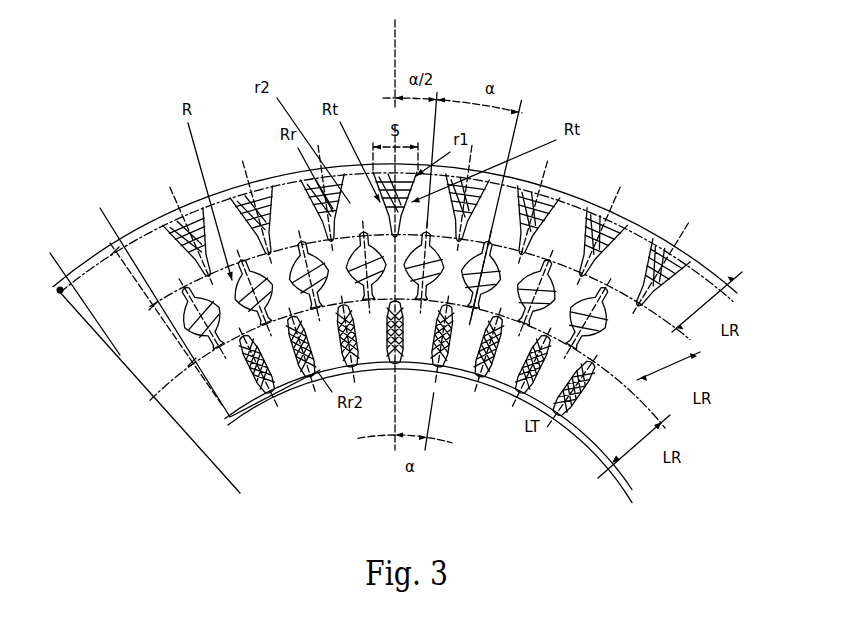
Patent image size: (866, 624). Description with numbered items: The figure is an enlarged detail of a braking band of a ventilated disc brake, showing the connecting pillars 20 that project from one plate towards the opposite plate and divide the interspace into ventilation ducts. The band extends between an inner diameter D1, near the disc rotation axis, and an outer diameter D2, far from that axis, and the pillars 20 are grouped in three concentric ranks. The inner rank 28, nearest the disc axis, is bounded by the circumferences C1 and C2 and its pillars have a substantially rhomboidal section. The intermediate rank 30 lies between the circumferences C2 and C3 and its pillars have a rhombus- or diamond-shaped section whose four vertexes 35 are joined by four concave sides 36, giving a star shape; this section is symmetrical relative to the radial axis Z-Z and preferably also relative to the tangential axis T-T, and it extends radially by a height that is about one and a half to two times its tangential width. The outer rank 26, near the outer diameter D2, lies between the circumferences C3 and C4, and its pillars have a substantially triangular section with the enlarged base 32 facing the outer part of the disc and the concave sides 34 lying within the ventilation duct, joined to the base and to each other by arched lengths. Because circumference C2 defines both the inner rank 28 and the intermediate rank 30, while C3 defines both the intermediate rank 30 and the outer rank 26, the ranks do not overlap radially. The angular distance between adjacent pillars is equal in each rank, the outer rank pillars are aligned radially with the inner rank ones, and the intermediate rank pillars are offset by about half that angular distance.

The pillars 20 is at (180, 236).
The outer rank 26 is at (670, 262).
The inner rank 28 is at (704, 258).
The intermediate rank 30 is at (528, 347).
The base 32 is at (465, 223).
The sides 34 is at (383, 212).
The vertexes 35 is at (543, 297).
The sides 36 is at (580, 385).
The circumference C1 is at (605, 437).
The circumference C2 is at (637, 379).
The circumference C3 is at (676, 330).
The circumference C4 is at (712, 272).
The inner diameter D1 is at (631, 458).
The outer diameter D2 is at (149, 390).
The radial axis Z-Z is at (400, 48).
The tangential axis T-T is at (85, 294).